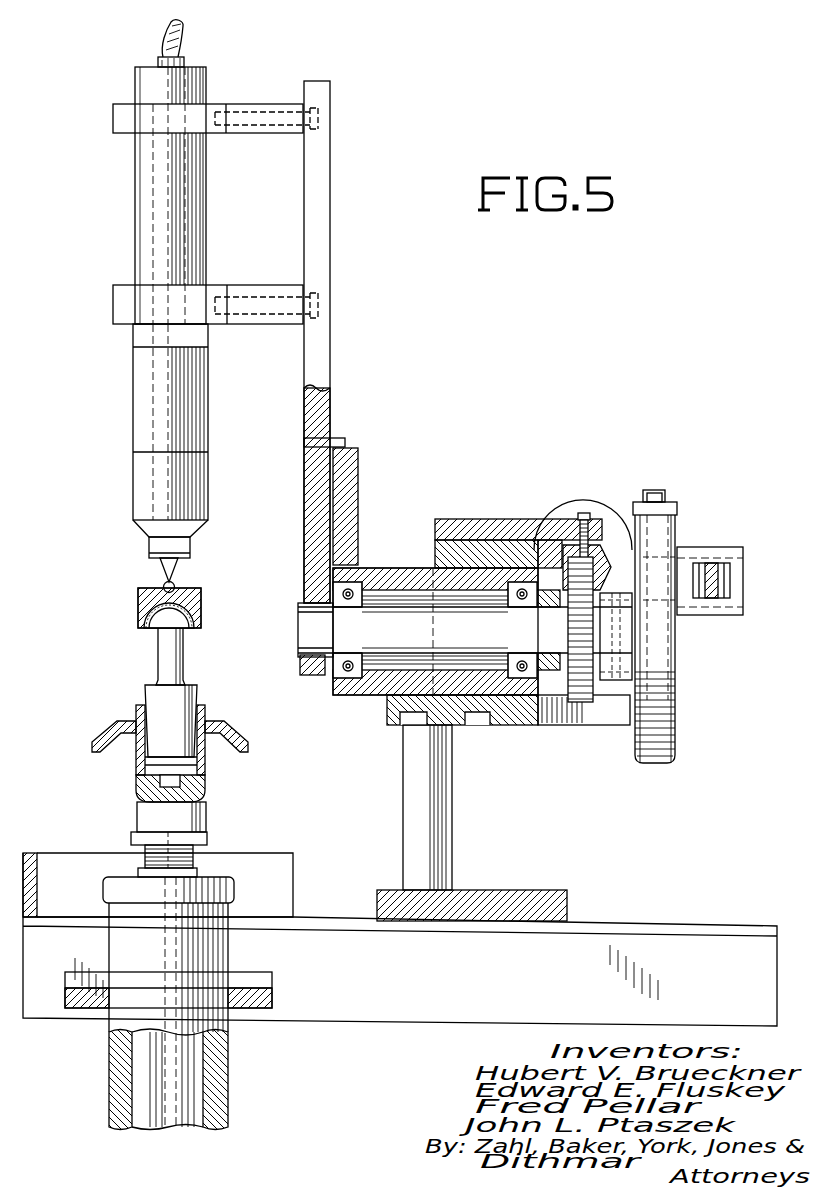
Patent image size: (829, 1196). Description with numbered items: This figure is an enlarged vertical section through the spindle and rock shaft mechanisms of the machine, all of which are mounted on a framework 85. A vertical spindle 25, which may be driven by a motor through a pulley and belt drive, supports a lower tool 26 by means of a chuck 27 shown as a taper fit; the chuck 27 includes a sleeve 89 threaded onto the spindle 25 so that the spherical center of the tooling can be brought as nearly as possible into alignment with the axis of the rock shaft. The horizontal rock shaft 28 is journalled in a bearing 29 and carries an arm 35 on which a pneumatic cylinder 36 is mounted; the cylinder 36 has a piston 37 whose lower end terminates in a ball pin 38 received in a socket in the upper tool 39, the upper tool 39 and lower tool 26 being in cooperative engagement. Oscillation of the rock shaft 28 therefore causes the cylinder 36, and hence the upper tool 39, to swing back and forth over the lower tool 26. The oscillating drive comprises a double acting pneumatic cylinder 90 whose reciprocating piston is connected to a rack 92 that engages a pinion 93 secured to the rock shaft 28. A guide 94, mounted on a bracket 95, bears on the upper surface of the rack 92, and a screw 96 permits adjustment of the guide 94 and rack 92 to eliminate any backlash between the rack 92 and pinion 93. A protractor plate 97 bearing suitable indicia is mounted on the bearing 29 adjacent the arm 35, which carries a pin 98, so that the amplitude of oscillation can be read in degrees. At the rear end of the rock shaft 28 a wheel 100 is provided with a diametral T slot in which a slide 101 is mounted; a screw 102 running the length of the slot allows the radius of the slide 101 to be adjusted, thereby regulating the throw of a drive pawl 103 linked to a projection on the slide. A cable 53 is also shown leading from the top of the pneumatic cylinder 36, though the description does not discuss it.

The spindle 25 is at (158, 1118).
The lower tool 26 is at (162, 648).
The chuck 27 is at (205, 781).
The rock shaft 28 is at (300, 645).
The bearing 29 is at (378, 565).
The arm 35 is at (322, 163).
The pneumatic cylinder 36 is at (152, 207).
The piston 37 is at (155, 403).
The ball pin 38 is at (175, 586).
The upper tool 39 is at (202, 606).
The cable 53 is at (183, 42).
The framework 85 is at (632, 922).
The sleeve 89 is at (97, 742).
The double acting pneumatic cylinder 90 is at (595, 500).
The rack 92 is at (565, 545).
The pinion 93 is at (590, 702).
The guide 94 is at (485, 518).
The bracket 95 is at (437, 546).
The screw 96 is at (585, 512).
The protractor plate 97 is at (360, 460).
The pin 98 is at (335, 437).
The wheel 100 is at (677, 522).
The slide 101 is at (727, 547).
The screw 102 is at (657, 490).
The drive pawl 103 is at (730, 578).